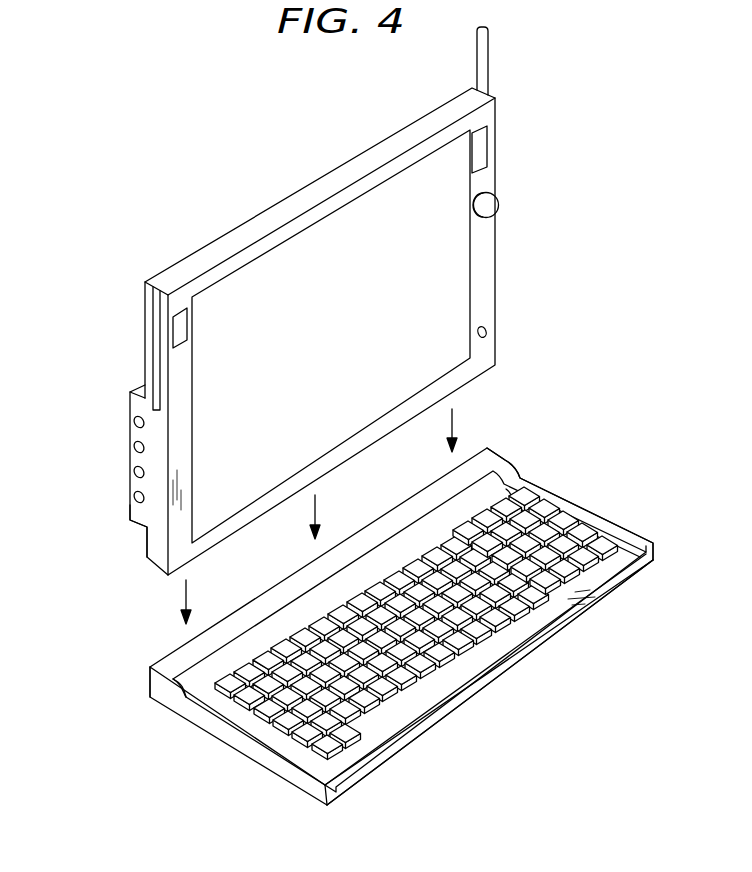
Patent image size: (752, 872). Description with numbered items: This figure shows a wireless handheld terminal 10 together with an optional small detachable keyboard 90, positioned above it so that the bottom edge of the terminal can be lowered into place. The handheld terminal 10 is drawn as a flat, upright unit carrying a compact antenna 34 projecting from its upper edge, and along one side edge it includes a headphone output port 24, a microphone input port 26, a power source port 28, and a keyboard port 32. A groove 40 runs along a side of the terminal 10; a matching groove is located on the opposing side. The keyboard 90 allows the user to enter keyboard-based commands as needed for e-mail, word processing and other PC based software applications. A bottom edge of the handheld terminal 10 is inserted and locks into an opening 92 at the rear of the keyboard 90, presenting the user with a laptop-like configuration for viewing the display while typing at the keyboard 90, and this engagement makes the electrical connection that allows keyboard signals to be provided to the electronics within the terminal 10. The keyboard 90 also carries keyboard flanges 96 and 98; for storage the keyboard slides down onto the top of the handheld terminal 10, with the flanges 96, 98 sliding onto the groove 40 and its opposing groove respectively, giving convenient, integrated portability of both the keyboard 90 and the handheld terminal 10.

The wireless handheld terminal 10 is at (300, 200).
The headphone output port 24 is at (130, 405).
The microphone input port 26 is at (133, 437).
The power source port 28 is at (133, 483).
The keyboard port 32 is at (130, 503).
The compact antenna 34 is at (488, 50).
The groove 40 is at (148, 324).
The keyboard 90 is at (364, 638).
The opening 92 is at (178, 661).
The keyboard flange 96 is at (297, 762).
The keyboard flange 98 is at (600, 522).